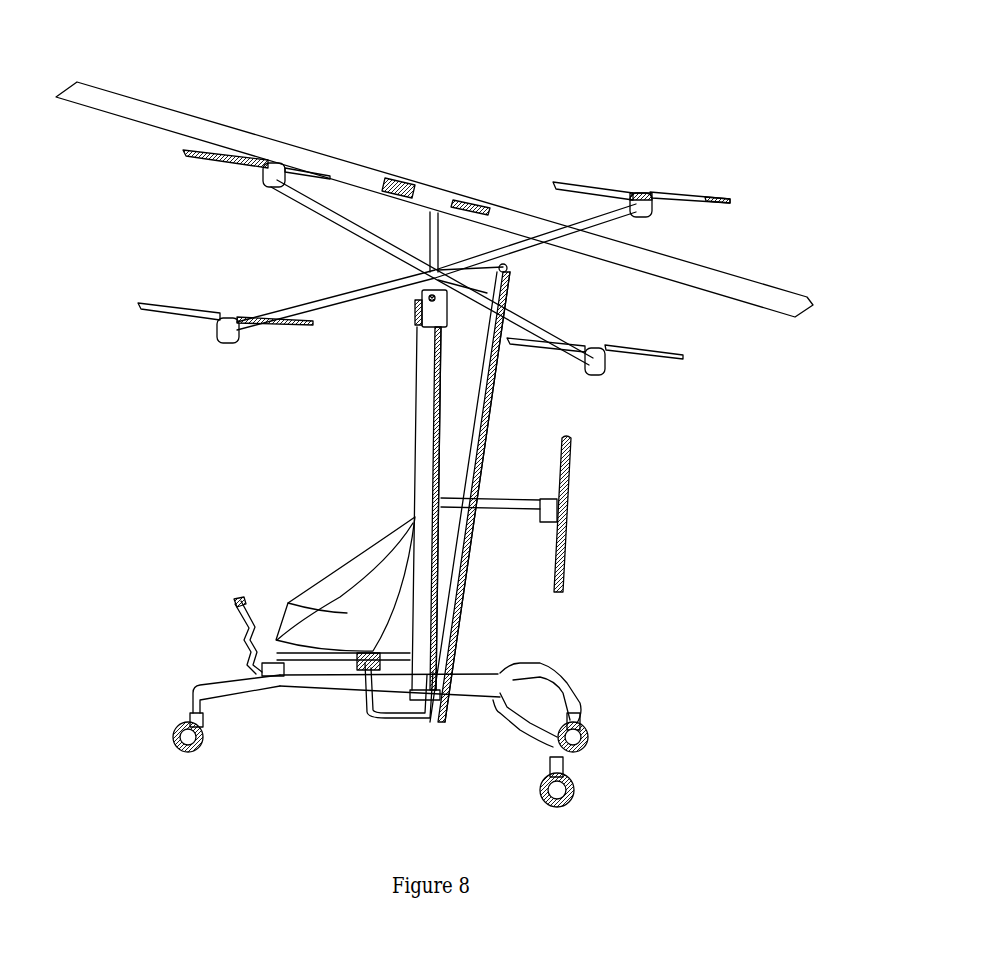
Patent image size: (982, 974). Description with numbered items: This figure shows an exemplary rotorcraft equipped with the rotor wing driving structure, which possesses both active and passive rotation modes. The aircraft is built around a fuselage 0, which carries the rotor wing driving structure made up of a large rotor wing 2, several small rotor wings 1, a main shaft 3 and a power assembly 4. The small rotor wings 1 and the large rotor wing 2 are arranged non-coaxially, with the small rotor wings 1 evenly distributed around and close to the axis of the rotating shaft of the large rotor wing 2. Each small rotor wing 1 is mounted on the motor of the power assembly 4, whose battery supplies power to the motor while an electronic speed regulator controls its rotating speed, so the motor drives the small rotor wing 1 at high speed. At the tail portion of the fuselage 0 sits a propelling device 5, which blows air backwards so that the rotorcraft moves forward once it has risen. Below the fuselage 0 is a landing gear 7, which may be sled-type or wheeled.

The fuselage 0 is at (316, 546).
The small rotor wing 1 is at (600, 184).
The large rotor wing 2 is at (147, 106).
The main shaft 3 is at (429, 219).
The power assembly 4 is at (652, 210).
The propelling device 5 is at (564, 489).
The landing gear 7 is at (585, 726).